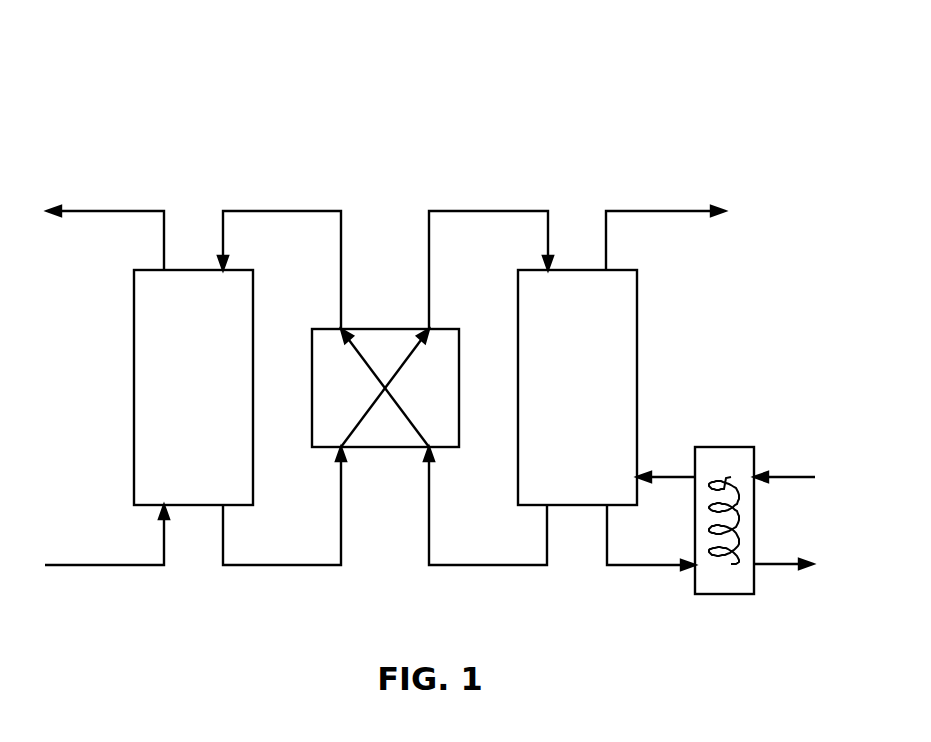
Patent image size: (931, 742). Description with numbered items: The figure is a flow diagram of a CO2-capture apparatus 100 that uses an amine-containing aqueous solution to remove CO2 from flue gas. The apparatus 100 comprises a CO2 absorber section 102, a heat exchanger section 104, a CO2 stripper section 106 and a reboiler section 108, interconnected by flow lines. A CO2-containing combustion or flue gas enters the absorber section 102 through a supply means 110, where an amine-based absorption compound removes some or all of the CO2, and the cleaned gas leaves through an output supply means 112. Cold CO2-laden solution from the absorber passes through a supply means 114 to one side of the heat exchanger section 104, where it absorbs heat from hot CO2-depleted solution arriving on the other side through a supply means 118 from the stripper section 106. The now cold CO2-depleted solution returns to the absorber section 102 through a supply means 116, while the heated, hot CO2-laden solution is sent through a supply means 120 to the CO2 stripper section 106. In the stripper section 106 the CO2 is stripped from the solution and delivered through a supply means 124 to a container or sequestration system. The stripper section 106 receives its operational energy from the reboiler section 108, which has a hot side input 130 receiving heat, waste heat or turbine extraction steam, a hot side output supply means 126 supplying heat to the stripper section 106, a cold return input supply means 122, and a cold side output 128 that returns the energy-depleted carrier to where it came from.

The CO2-capture apparatus 100 is at (266, 92).
The CO2 absorber section 102 is at (208, 398).
The heat exchanger section 104 is at (440, 398).
The CO2 stripper section 106 is at (592, 398).
The reboiler section 108 is at (723, 594).
The supply means 110 is at (105, 565).
The overhead stream from first unit 112 is at (135, 211).
The supply means 114 is at (282, 565).
The supply means 116 is at (282, 211).
The supply means 118 is at (488, 565).
The supply means 120 is at (488, 211).
The cold return input supply means 122 is at (636, 565).
The supply means 124 is at (666, 211).
The hot side output supply means 126 is at (667, 472).
The cold side output 128 is at (806, 564).
The hot side input 130 is at (806, 476).